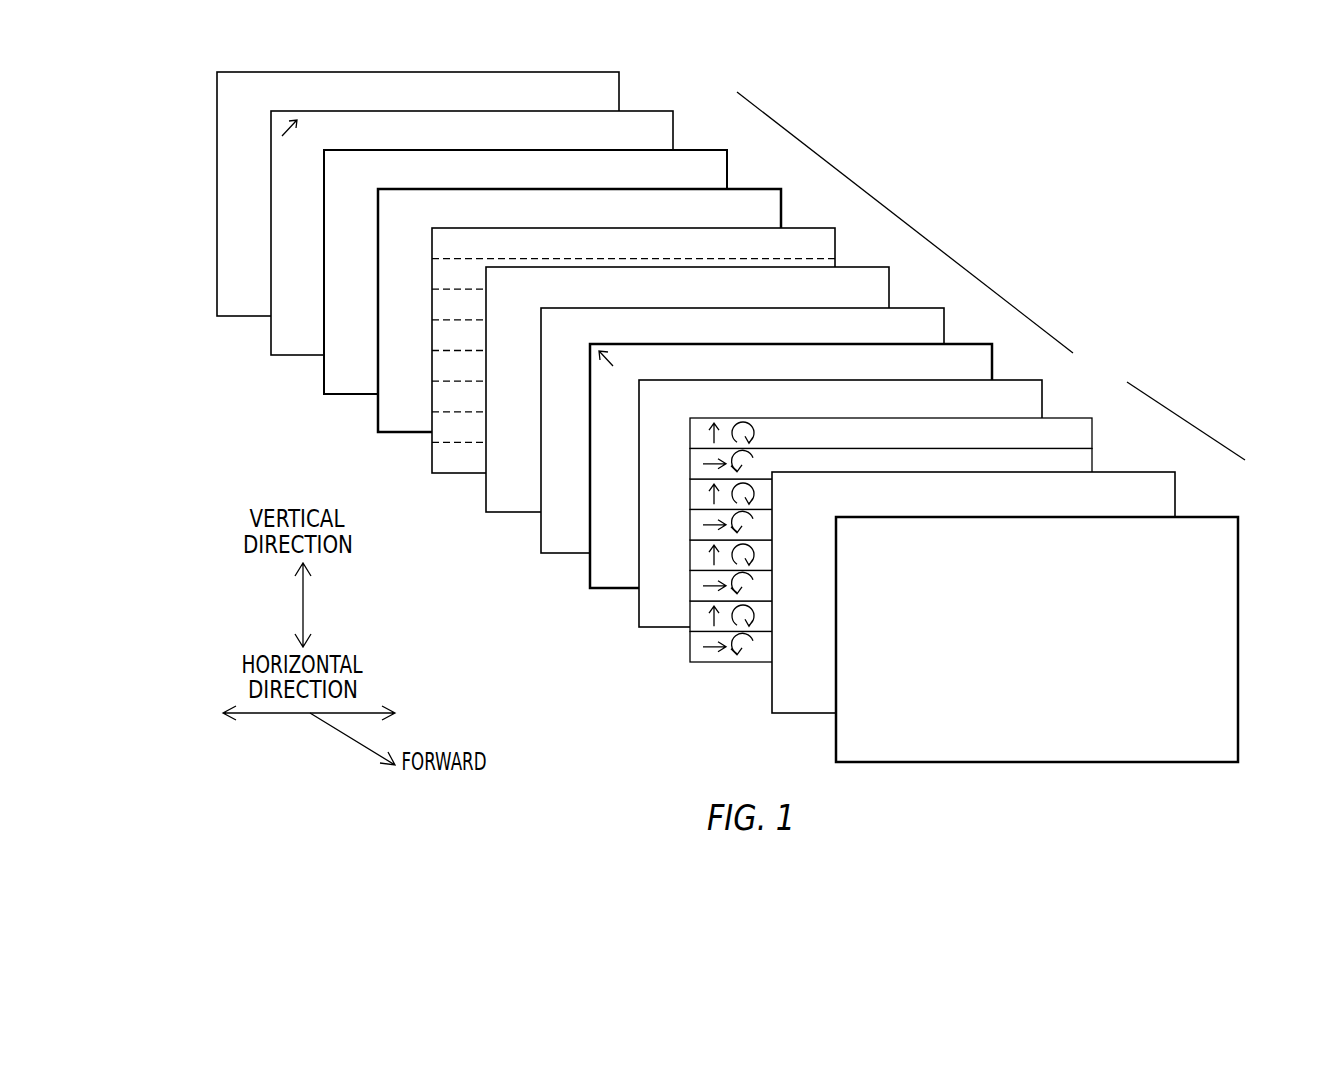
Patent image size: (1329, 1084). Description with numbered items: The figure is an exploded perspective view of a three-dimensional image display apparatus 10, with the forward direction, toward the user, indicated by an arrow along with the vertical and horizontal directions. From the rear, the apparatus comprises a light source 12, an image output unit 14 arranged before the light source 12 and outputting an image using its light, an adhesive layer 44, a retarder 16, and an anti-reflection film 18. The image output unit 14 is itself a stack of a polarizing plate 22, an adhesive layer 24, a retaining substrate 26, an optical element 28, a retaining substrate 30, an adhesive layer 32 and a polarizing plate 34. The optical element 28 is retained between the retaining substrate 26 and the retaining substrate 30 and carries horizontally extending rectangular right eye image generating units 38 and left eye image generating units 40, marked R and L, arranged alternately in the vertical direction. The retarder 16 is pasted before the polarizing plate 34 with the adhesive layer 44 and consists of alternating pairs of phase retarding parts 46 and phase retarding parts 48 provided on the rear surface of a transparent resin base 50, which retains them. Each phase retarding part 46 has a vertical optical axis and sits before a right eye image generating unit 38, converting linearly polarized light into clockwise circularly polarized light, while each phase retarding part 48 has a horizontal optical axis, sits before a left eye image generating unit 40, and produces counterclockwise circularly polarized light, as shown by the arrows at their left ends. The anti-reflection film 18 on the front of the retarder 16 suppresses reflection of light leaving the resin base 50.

The three-dimensional image display apparatus 10 is at (1018, 200).
The light source 12 is at (620, 93).
The image output unit 14 is at (910, 222).
The retarder 16 is at (1183, 416).
The anti-reflection film 18 is at (1240, 650).
The polarizing plate 22 is at (676, 130).
The adhesive layer 24 is at (730, 170).
The retaining substrate 26 is at (785, 205).
The optical element 28 is at (840, 253).
The retaining substrate 30 is at (893, 291).
The adhesive layer 32 is at (945, 330).
The polarizing plate 34 is at (993, 365).
The right eye image generating unit 38 is at (437, 363).
The left eye image generating unit 40 is at (437, 398).
The adhesive layer 44 is at (1043, 400).
The phase retarding part 46 is at (1093, 430).
The phase retarding part 48 is at (1093, 462).
The resin base 50 is at (1177, 482).